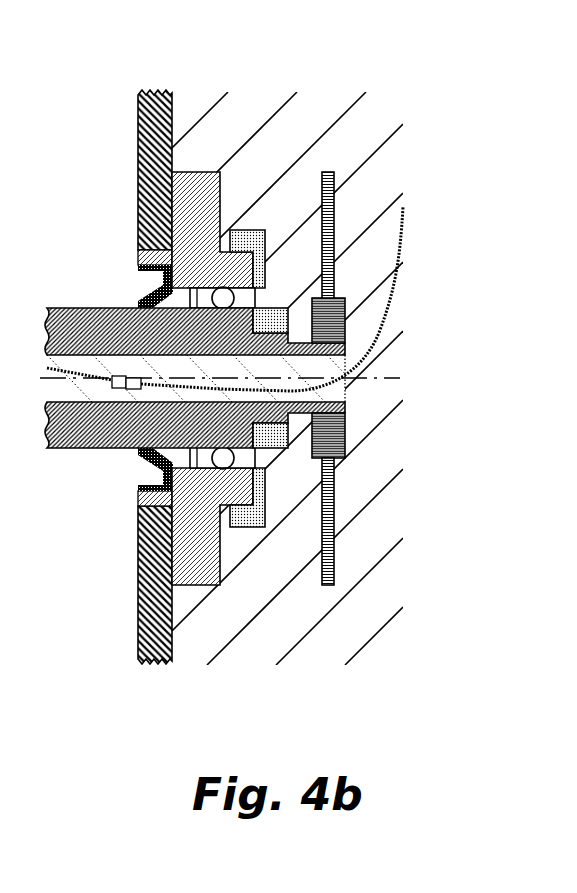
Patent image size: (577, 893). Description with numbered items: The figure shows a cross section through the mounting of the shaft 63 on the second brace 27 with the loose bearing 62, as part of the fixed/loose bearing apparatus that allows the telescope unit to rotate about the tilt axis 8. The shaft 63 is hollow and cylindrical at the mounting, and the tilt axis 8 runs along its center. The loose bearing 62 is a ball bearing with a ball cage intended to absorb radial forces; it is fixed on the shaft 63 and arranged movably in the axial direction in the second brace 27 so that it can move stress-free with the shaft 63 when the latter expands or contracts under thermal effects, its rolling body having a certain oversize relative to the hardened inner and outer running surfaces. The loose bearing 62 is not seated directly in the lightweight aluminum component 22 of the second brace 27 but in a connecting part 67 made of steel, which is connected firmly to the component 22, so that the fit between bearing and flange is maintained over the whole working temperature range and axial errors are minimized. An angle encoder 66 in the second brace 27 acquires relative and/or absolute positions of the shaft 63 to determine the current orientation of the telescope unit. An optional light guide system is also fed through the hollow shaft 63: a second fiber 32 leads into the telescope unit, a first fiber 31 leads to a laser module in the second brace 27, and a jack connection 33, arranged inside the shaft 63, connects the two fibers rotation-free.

The second brace 27 is at (438, 90).
The loose bearing 62 is at (240, 295).
The second fiber 32 is at (80, 372).
The angle encoder 66 is at (330, 329).
The first fiber 31 is at (350, 380).
The tilt axis 8 is at (400, 378).
The jack connection 33 is at (123, 381).
The shaft 63 is at (230, 428).
The connecting part 67 is at (202, 485).
The component 22 is at (173, 643).